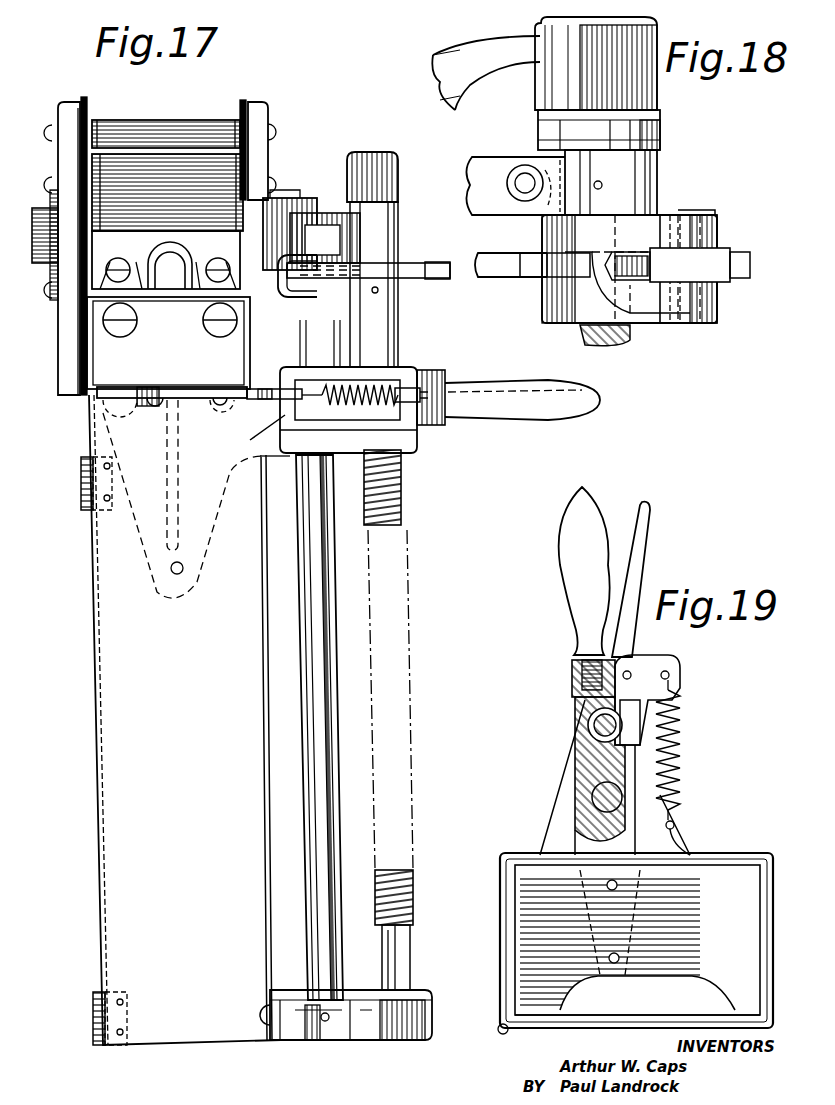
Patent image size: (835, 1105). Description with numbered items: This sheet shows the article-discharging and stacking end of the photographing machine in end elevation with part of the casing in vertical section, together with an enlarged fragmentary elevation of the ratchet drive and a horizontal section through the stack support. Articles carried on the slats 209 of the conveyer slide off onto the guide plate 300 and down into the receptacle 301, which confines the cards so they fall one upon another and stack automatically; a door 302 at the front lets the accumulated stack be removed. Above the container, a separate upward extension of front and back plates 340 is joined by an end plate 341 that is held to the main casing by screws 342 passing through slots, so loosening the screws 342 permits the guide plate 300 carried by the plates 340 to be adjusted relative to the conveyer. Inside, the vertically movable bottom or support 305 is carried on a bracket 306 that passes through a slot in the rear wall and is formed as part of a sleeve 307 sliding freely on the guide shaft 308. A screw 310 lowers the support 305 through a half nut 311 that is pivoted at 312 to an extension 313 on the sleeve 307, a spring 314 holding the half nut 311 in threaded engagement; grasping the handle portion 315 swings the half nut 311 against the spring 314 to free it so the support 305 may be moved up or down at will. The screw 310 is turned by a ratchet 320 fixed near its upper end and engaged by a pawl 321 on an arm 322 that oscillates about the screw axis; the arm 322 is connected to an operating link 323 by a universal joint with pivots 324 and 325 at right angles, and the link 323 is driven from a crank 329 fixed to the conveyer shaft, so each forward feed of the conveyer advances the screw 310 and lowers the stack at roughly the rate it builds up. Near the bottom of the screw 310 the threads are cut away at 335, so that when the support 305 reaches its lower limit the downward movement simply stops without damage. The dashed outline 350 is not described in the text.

In FIG. 17, the cross members or slats 209 is at (135, 140).
In FIG. 17, the guide plate 300 is at (182, 178).
In FIG. 17, the front and back plates 340 is at (95, 184).
In FIG. 17, the crank 329 is at (283, 201).
In FIG. 17, the screw 310 is at (382, 152).
In FIG. 18, the screw 310 is at (600, 24).
In FIG. 19, the screw 310 is at (588, 725).
In FIG. 17, the screws 342 is at (128, 250).
In FIG. 17, the end plate 341 is at (204, 261).
In FIG. 17, the arm 322 is at (335, 250).
In FIG. 18, the arm 322 is at (718, 232).
In FIG. 17, the pawl 321 is at (322, 263).
In FIG. 18, the pawl 321 is at (748, 262).
In FIG. 17, the ratchet 320 is at (434, 279).
In FIG. 18, the ratchet 320 is at (514, 276).
In FIG. 17, the bottom or support 305 is at (163, 387).
In FIG. 19, the bottom or support 305 is at (668, 972).
In FIG. 17, the bracket 306 is at (226, 402).
In FIG. 19, the bracket 306 is at (682, 846).
In FIG. 17, the sleeve 307 is at (333, 386).
In FIG. 17, the extension 313 is at (445, 368).
In FIG. 19, the extension 313 is at (572, 674).
In FIG. 17, the spring 314 is at (380, 410).
In FIG. 19, the spring 314 is at (678, 776).
In FIG. 17, the half nut 311 is at (412, 406).
In FIG. 19, the half nut 311 is at (650, 732).
In FIG. 17, the handle portion 315 is at (560, 416).
In FIG. 19, the handle portion 315 is at (645, 545).
In FIG. 17, the bracket (dashed) 350 is at (160, 598).
In FIG. 17, the guide shaft 308 is at (330, 606).
In FIG. 19, the guide shaft 308 is at (592, 797).
In FIG. 17, the receptacle 301 is at (189, 720).
In FIG. 19, the receptacle 301 is at (756, 853).
In FIG. 17, the door 302 is at (106, 762).
In FIG. 19, the door 302 is at (646, 1029).
In FIG. 17, the cut away screw threads 335 is at (411, 964).
In FIG. 18, the pivot 325 is at (656, 117).
In FIG. 18, the operating link 323 is at (492, 157).
In FIG. 18, the pivot 324 is at (524, 202).
In FIG. 19, the pivot 312 is at (638, 670).